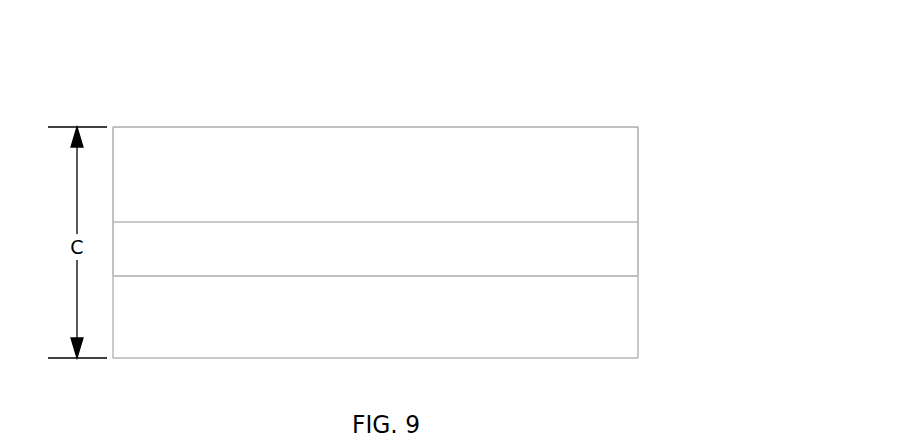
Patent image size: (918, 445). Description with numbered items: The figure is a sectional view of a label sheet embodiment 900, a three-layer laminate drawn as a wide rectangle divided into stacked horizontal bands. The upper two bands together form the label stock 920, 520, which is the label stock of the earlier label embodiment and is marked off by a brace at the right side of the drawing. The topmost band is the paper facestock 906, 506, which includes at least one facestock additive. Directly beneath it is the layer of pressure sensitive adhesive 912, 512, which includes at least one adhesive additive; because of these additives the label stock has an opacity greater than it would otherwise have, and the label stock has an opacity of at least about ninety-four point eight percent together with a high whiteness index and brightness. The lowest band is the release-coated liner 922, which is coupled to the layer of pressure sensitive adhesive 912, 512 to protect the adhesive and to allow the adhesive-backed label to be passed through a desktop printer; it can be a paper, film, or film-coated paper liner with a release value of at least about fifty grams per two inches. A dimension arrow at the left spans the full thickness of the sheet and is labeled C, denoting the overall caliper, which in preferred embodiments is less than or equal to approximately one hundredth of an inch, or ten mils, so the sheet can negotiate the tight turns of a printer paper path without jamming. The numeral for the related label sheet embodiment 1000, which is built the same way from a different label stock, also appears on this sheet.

The label sheet embodiment 900 is at (635, 112).
The paper facestock 906 is at (440, 174).
The paper facestock 506 is at (623, 187).
The layer of pressure sensitive adhesive 912 is at (440, 249).
The layer of pressure sensitive adhesive 512 is at (623, 247).
The release-coated liner 922 is at (622, 317).
The label stock 920 is at (480, 201).
The label stock 520 is at (773, 275).
The label sheet embodiment 1000 is at (781, 433).